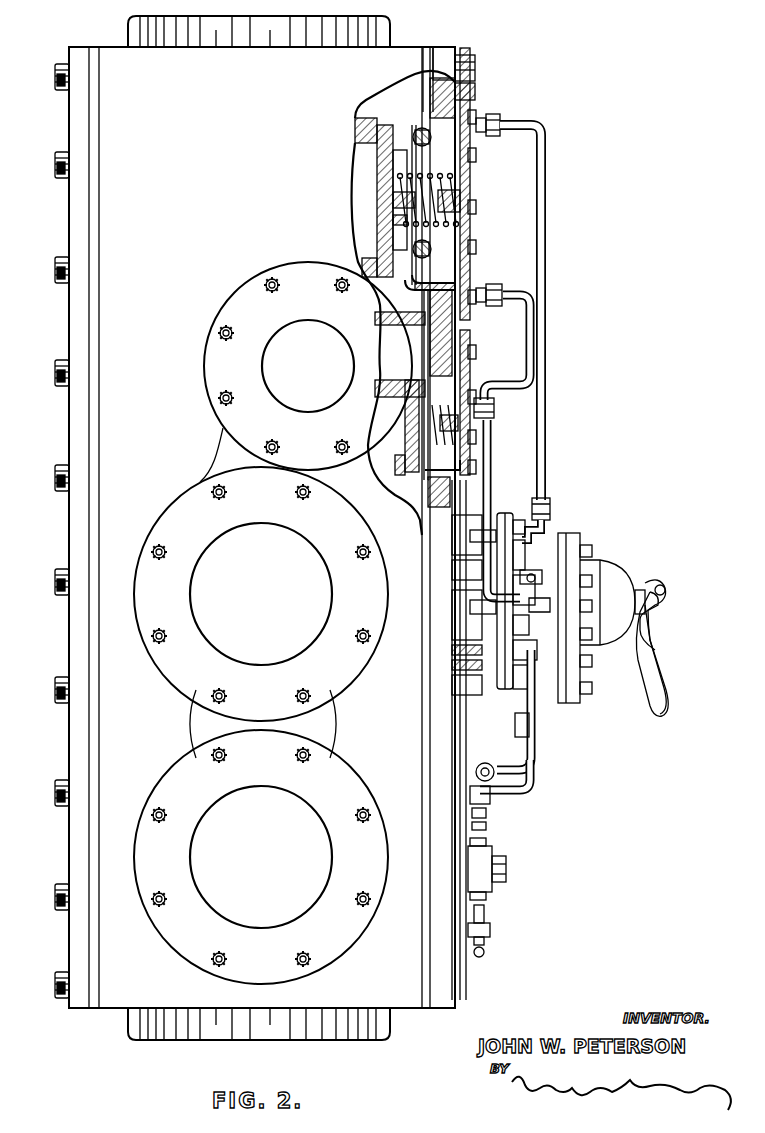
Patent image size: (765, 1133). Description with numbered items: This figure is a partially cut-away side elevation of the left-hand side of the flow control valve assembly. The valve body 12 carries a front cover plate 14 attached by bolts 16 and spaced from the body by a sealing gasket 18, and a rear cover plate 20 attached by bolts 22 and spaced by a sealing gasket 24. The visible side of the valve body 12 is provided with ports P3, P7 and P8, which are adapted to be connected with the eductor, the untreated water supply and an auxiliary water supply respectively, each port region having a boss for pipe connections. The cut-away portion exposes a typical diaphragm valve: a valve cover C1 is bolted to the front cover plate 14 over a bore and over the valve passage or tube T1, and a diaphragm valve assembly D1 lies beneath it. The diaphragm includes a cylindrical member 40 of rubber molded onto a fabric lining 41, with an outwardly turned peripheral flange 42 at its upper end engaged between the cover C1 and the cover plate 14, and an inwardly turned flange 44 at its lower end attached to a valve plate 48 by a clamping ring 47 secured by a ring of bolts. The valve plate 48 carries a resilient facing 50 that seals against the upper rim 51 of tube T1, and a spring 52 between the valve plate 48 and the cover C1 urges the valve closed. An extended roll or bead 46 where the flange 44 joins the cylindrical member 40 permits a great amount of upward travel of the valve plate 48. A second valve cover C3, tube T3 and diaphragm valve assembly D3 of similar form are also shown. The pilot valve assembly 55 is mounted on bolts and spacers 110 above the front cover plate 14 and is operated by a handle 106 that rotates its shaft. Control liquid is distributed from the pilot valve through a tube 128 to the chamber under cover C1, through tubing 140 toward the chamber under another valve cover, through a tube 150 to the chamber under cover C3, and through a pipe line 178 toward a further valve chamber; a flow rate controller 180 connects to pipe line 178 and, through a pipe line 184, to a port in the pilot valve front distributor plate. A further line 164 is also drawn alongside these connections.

The valve body 12 is at (186, 103).
The rear cover plate 20 is at (80, 58).
The sealing gasket 24 is at (92, 48).
The bolts 22 is at (55, 78).
The sealing gasket 18 is at (428, 46).
The front cover plate 14 is at (446, 60).
The bolts 16 is at (474, 70).
The outwardly turned peripheral flange 42 is at (474, 92).
The extended roll or bead 46 is at (436, 82).
The inwardly turned flange 44 is at (402, 100).
The valve cover C1 is at (472, 162).
The cylindrical member 40 is at (470, 126).
The fabric lining 41 is at (428, 142).
The valve passage or tube T1 is at (360, 160).
The spring 52 is at (420, 185).
The facing 50 is at (380, 210).
The valve plate 48 is at (385, 232).
The clamping ring 47 is at (428, 250).
The upper rim 51 is at (372, 272).
The diaphragm valve assembly D1 is at (433, 279).
The pipe line or tubing 140 is at (514, 290).
The tube 128 is at (547, 350).
The pipe or tube 150 is at (492, 504).
The valve cover C3 is at (470, 376).
The valve passage or tube T3 is at (398, 416).
The diaphragm valve assembly D3 is at (460, 460).
The pilot valve assembly 55 is at (668, 523).
The bolts and spacers 110 is at (455, 541).
The handle 106 is at (670, 655).
The pipe line 178 is at (536, 724).
The conduit 164 is at (536, 778).
The flow rate controller 180 is at (496, 866).
The pipe line 184 is at (484, 952).
The port P3 is at (312, 382).
The port P7 is at (265, 612).
The port P8 is at (265, 875).